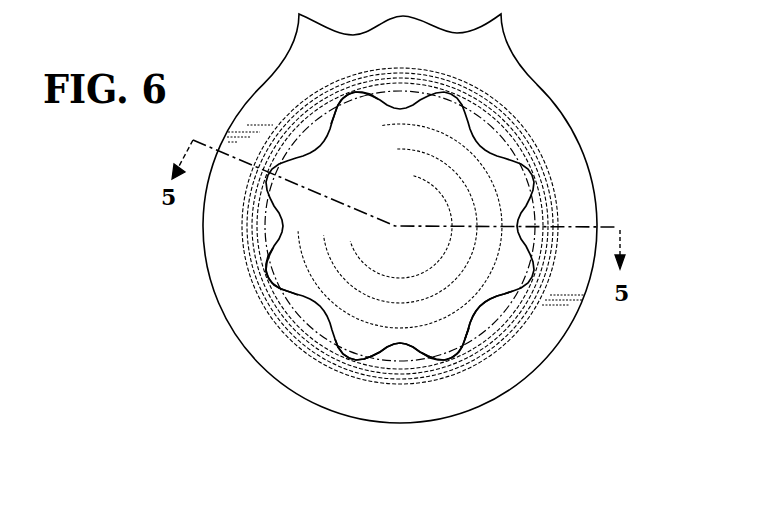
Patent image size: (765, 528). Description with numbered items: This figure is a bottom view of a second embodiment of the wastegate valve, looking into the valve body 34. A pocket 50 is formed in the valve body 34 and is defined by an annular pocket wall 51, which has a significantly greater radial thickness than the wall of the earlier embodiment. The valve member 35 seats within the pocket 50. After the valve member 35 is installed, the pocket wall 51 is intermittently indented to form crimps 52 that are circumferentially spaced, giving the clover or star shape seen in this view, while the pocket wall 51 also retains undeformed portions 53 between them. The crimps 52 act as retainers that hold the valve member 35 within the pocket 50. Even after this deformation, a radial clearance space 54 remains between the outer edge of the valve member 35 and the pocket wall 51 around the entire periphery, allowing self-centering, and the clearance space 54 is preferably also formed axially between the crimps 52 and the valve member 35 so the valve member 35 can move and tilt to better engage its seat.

The valve body 34 is at (527, 100).
The valve member 35 is at (360, 307).
The pocket 50 is at (505, 265).
The pocket wall 51 is at (563, 275).
The crimps 52 is at (403, 347).
The undeformed portions 53 is at (260, 280).
The clearance space 54 is at (345, 97).